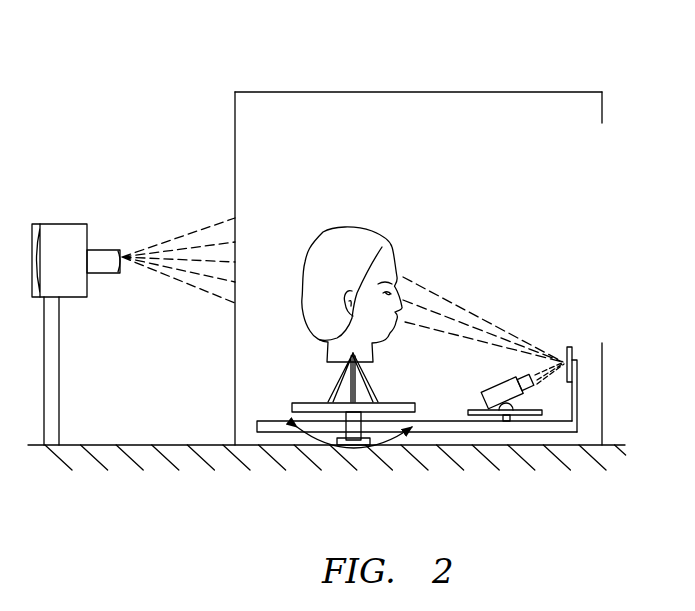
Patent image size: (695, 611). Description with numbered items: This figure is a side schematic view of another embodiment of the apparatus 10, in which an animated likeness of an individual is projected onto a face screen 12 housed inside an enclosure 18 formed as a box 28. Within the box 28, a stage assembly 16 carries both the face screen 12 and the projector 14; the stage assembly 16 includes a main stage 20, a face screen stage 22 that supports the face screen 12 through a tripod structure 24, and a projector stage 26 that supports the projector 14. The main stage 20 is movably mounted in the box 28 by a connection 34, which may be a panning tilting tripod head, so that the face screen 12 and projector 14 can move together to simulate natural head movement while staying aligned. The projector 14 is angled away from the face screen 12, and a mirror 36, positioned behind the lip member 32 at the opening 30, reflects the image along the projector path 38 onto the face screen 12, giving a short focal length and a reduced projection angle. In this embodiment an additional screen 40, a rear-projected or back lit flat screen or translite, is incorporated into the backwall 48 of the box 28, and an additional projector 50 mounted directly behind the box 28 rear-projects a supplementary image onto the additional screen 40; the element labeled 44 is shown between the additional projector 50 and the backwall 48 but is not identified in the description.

The apparatus 10 is at (622, 84).
The face screen 12 is at (410, 251).
The projector 14 is at (533, 324).
The stage assembly 16 is at (339, 356).
The enclosure 18 is at (415, 222).
The main stage 20 is at (446, 421).
The face screen stage 22 is at (300, 403).
The tripod structure 24 is at (370, 392).
The projector stage 26 is at (483, 410).
The box 28 is at (330, 92).
The opening 30 is at (615, 213).
The lip member 32 is at (602, 392).
The connection 34 is at (352, 446).
The mirror 36 is at (573, 355).
The projector path 38 is at (453, 320).
The additional screen 40 is at (263, 225).
The light beam 44 is at (214, 178).
The backwall 48 is at (235, 150).
The additional projector 50 is at (58, 224).